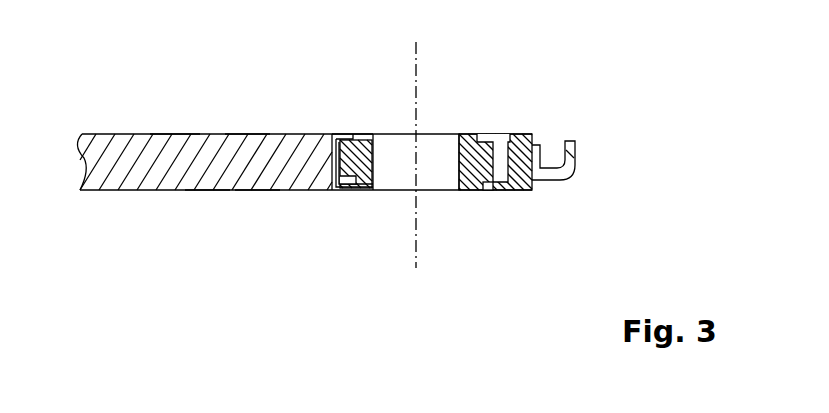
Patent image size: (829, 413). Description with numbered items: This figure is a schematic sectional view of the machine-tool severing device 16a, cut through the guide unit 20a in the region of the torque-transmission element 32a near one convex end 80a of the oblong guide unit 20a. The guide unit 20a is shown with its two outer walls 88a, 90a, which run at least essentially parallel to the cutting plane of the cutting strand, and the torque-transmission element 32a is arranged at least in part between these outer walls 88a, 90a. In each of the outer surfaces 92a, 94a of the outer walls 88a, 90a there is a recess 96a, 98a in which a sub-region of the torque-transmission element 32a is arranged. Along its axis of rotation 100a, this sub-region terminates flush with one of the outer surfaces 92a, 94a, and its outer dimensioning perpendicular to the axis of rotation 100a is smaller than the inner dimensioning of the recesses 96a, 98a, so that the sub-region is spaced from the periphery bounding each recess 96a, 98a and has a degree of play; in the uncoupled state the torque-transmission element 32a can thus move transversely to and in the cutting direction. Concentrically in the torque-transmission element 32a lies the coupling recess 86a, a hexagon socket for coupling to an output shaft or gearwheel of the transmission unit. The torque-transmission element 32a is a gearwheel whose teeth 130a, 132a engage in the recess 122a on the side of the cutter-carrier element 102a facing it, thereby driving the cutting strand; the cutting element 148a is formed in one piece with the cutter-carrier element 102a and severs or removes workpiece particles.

The machine-tool severing device 16a is at (568, 67).
The guide unit 20a is at (105, 190).
The torque-transmission element 32a is at (363, 192).
The convex end 80a is at (598, 225).
The coupling recess 86a is at (443, 175).
The outer wall 88a is at (208, 190).
The outer wall 90a is at (172, 134).
The outer surface 92a is at (258, 184).
The outer surface 94a is at (247, 134).
The recess 96a is at (355, 192).
The recess 98a is at (357, 134).
The axis of rotation 100a is at (417, 50).
The cutter-carrier element 102a is at (525, 185).
The recess 122a is at (497, 134).
The tooth 130a is at (337, 192).
The tooth 132a is at (476, 180).
The cutting element 148a is at (576, 162).